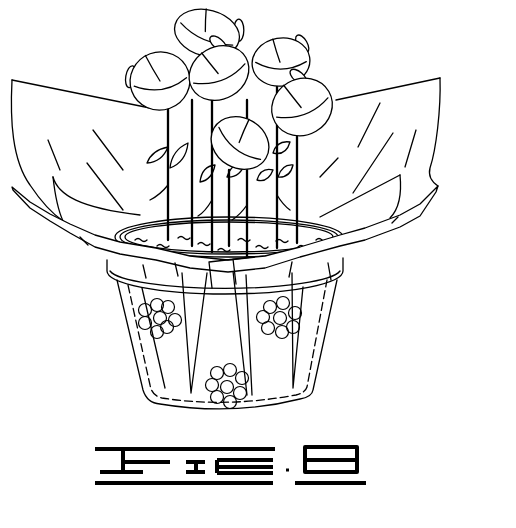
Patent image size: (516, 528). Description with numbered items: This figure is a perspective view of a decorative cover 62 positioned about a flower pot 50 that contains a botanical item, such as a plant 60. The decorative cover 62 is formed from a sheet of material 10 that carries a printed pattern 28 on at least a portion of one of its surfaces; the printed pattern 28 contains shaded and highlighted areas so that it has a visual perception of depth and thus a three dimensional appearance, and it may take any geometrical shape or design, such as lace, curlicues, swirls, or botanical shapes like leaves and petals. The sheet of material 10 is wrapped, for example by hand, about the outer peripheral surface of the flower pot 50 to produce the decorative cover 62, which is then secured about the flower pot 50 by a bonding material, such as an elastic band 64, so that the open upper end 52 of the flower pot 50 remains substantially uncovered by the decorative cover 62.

The sheet of material 10 is at (263, 216).
The printed pattern 28 is at (250, 393).
The flower pot 50 is at (217, 238).
The open upper end 52 is at (155, 225).
The plant 60 is at (337, 139).
The decorative cover 62 is at (437, 247).
The elastic band 64 is at (107, 262).